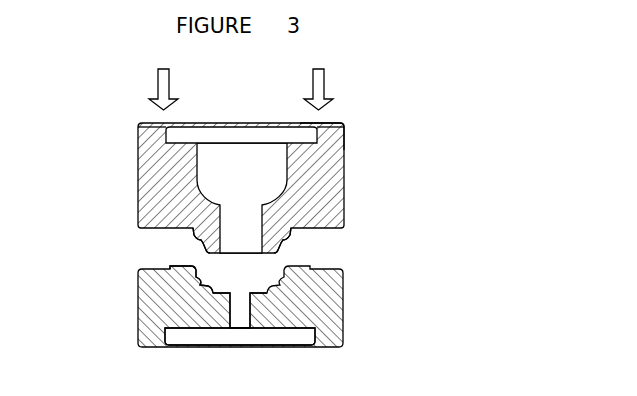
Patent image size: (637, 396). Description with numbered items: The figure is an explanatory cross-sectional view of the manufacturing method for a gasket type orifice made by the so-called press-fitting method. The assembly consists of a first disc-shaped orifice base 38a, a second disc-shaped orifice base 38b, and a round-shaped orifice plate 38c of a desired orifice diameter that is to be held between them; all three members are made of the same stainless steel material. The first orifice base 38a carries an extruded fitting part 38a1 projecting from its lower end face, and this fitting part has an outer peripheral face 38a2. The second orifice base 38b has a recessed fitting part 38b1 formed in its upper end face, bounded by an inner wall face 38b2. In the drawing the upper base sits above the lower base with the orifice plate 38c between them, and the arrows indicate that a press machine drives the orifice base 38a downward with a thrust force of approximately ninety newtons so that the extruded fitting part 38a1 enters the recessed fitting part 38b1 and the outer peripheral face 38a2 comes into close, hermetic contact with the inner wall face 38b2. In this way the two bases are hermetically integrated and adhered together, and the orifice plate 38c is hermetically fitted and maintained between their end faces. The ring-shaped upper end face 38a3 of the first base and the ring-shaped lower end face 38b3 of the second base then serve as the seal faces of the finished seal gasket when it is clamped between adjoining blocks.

The orifice base 38a is at (322, 160).
The extruded fitting part 38a1 is at (203, 243).
The outer peripheral face 38a2 is at (282, 242).
The ring-shaped upper end face 38a3 is at (338, 123).
The orifice base 38b is at (327, 302).
The recessed fitting part 38b1 is at (214, 290).
The inner wall face 38b2 is at (203, 272).
The ring-shaped lower end face 38b3 is at (327, 347).
The orifice plate 38c is at (258, 292).